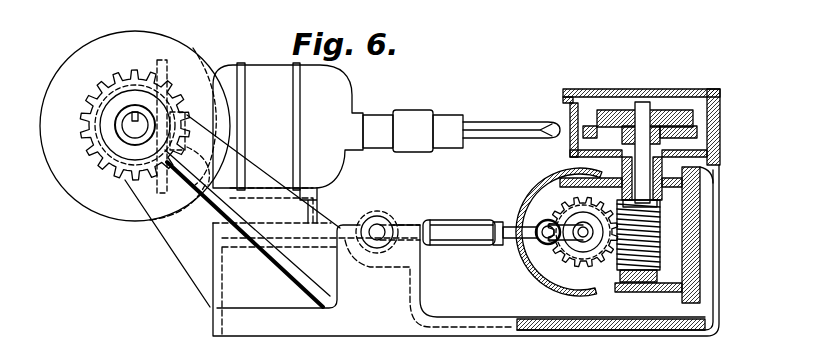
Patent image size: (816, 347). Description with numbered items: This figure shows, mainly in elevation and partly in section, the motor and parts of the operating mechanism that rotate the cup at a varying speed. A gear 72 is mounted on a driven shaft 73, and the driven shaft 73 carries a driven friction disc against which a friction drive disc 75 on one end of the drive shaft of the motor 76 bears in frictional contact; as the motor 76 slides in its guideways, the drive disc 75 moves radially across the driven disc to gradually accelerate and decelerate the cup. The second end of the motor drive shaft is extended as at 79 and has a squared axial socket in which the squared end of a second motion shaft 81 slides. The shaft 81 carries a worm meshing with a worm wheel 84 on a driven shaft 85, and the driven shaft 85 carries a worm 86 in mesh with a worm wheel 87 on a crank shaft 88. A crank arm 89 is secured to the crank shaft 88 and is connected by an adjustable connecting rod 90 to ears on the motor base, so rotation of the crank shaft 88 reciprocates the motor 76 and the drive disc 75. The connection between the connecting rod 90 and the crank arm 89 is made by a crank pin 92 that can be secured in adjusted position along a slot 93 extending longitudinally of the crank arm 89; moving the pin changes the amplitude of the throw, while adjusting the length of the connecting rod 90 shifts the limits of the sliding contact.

The gear 72 is at (100, 160).
The driven shaft 73 is at (132, 115).
The friction drive disc 75 is at (180, 110).
The motor 76 is at (260, 82).
The extended second end of the motor drive shaft 79 is at (410, 117).
The second motion shaft 81 is at (487, 127).
The worm wheel 84 is at (680, 115).
The driven shaft 85 is at (640, 160).
The worm 86 is at (647, 228).
The worm wheel 87 is at (567, 263).
The crank shaft 88 is at (553, 184).
The crank arm 89 is at (567, 246).
The adjustable connecting rod 90 is at (463, 246).
The crank pin 92 is at (536, 222).
The slot 93 is at (540, 212).